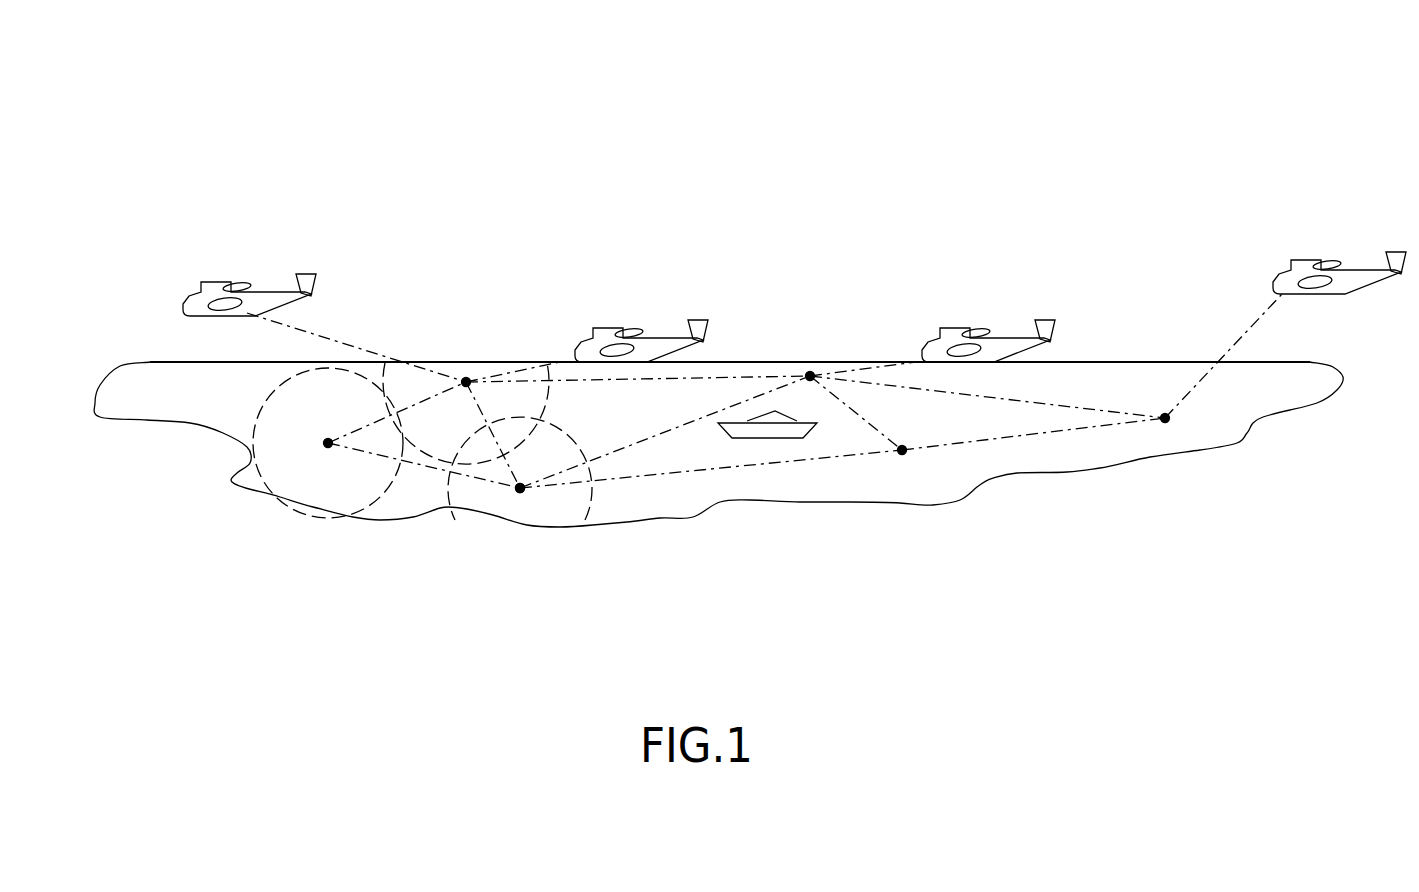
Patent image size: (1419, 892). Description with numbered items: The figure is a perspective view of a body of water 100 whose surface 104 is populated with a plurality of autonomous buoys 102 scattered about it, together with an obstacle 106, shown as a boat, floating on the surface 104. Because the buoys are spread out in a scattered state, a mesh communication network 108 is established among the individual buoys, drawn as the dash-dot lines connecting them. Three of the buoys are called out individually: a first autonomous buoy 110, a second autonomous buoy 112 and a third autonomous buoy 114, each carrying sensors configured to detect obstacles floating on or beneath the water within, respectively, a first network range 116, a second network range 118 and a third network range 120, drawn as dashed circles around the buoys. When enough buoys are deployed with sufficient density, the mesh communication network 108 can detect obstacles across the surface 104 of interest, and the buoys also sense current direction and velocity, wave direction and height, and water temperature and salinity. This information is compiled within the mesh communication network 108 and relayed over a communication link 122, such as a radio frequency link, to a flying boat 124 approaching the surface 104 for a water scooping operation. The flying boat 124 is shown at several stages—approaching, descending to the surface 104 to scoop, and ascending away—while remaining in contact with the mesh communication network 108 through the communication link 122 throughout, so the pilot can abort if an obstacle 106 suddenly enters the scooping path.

The body of water 100 is at (180, 436).
The plurality of autonomous buoys 102 is at (522, 490).
The surface 104 is at (222, 402).
The obstacle 106 is at (775, 432).
The mesh communication network 108 is at (722, 375).
The first autonomous buoy 110 is at (326, 448).
The second autonomous buoy 112 is at (518, 490).
The third autonomous buoy 114 is at (466, 380).
The first network range 116 is at (257, 467).
The second network range 118 is at (595, 492).
The third network range 120 is at (545, 392).
The communication link 122 is at (328, 337).
The flying boat 124 is at (262, 295).